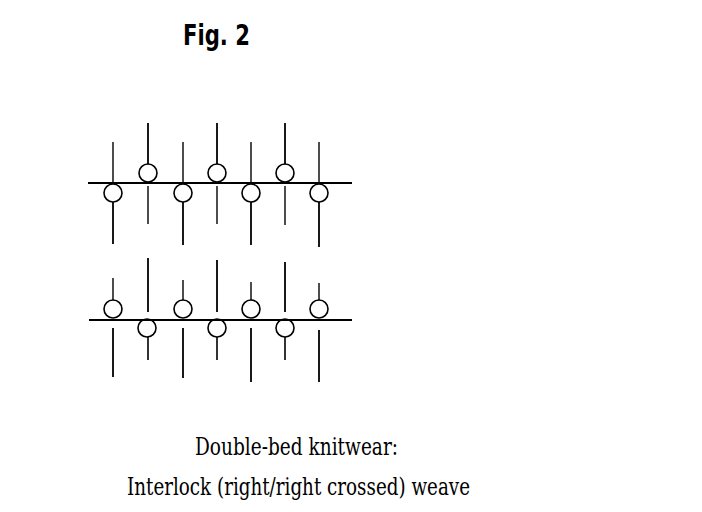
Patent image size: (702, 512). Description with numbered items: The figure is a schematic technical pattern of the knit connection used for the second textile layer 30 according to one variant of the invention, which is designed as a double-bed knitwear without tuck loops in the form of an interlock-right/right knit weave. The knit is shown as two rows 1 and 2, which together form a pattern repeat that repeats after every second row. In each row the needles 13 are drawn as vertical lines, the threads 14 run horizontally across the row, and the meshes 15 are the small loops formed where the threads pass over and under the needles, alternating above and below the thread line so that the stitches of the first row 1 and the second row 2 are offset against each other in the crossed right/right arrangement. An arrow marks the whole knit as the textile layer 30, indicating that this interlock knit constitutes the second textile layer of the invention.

The first row 1 is at (229, 165).
The second row 2 is at (204, 320).
The needle 13 is at (144, 128).
The thread 14 is at (335, 185).
The mesh 15 is at (224, 158).
The textile layer 30 is at (325, 221).